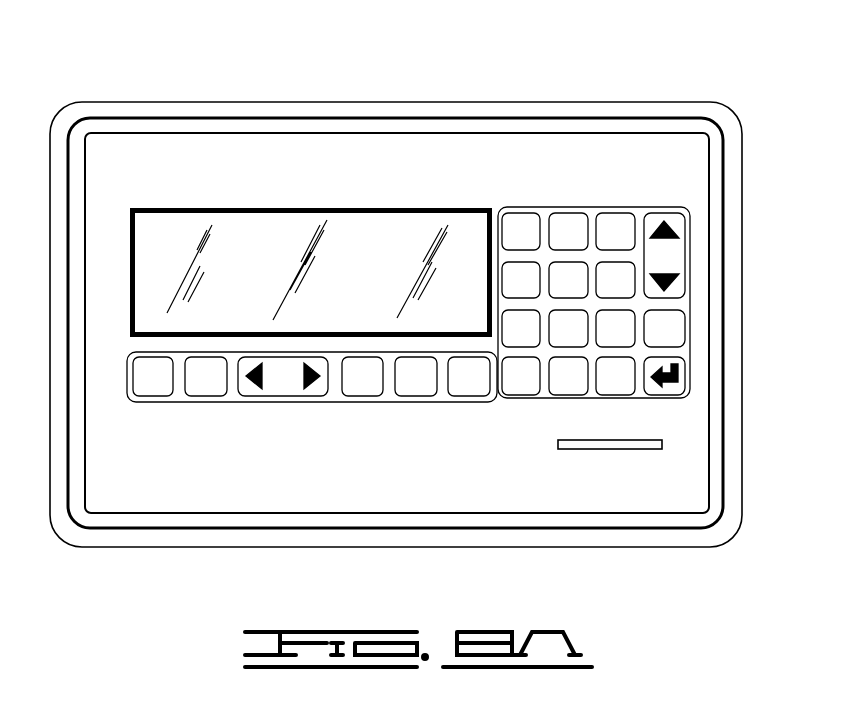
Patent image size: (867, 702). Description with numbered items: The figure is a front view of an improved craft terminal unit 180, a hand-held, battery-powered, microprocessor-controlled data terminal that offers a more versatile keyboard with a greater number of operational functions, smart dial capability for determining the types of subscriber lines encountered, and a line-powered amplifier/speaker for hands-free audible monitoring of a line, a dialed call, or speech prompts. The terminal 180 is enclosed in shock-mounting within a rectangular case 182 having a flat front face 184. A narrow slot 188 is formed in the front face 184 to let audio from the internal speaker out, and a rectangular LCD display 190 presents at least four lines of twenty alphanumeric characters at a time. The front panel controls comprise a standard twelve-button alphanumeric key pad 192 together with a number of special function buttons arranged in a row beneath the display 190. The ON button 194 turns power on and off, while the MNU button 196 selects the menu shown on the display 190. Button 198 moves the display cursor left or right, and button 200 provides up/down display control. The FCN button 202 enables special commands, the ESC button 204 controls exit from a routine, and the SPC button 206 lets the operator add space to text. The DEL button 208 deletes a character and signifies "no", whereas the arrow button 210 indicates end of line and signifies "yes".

The terminal unit 180 is at (452, 71).
The case 182 is at (652, 112).
The front face 184 is at (547, 145).
The slot 188 is at (655, 438).
The LCD display 190 is at (292, 228).
The alphanumeric key pad 192 is at (505, 206).
The ON button 194 is at (153, 388).
The MNU button 196 is at (205, 388).
The cursor button 198 is at (282, 385).
The up/down button 200 is at (670, 262).
The FCN button 202 is at (360, 388).
The ESC button 204 is at (415, 388).
The SPC button 206 is at (470, 388).
The DEL button 208 is at (675, 340).
The arrow button 210 is at (672, 388).